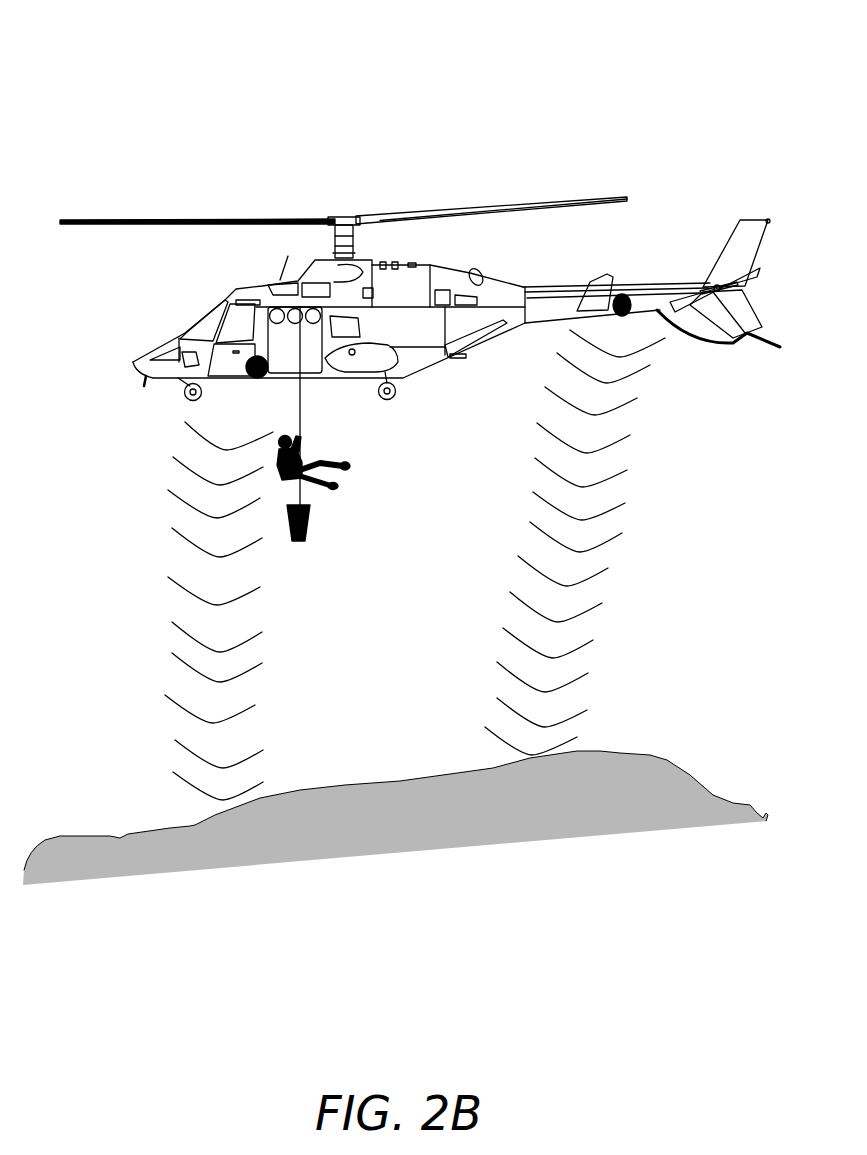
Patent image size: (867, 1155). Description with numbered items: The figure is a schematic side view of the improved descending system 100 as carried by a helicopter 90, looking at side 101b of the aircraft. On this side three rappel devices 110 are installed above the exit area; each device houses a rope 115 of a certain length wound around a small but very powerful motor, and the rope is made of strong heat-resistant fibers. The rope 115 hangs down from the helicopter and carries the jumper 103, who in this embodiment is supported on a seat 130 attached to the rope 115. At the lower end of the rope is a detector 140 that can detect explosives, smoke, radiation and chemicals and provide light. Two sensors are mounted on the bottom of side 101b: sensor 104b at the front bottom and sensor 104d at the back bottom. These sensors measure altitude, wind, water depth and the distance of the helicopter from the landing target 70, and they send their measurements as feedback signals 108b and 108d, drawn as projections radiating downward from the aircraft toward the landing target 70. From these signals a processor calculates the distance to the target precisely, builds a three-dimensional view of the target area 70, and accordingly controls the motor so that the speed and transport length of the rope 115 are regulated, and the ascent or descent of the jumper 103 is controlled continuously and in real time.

The descending system 100 is at (156, 55).
The rappel device 110 is at (270, 313).
The helicopter 90 is at (548, 290).
The side of the helicopter 101b is at (423, 350).
The sensor 104b is at (243, 380).
The sensor 104d is at (625, 296).
The feedback signal 108b is at (182, 467).
The feedback signal 108d is at (615, 448).
The rope 115 is at (302, 405).
The jumper 103 is at (303, 470).
The seat 130 is at (299, 480).
The detector 140 is at (303, 543).
The landing target 70 is at (367, 790).